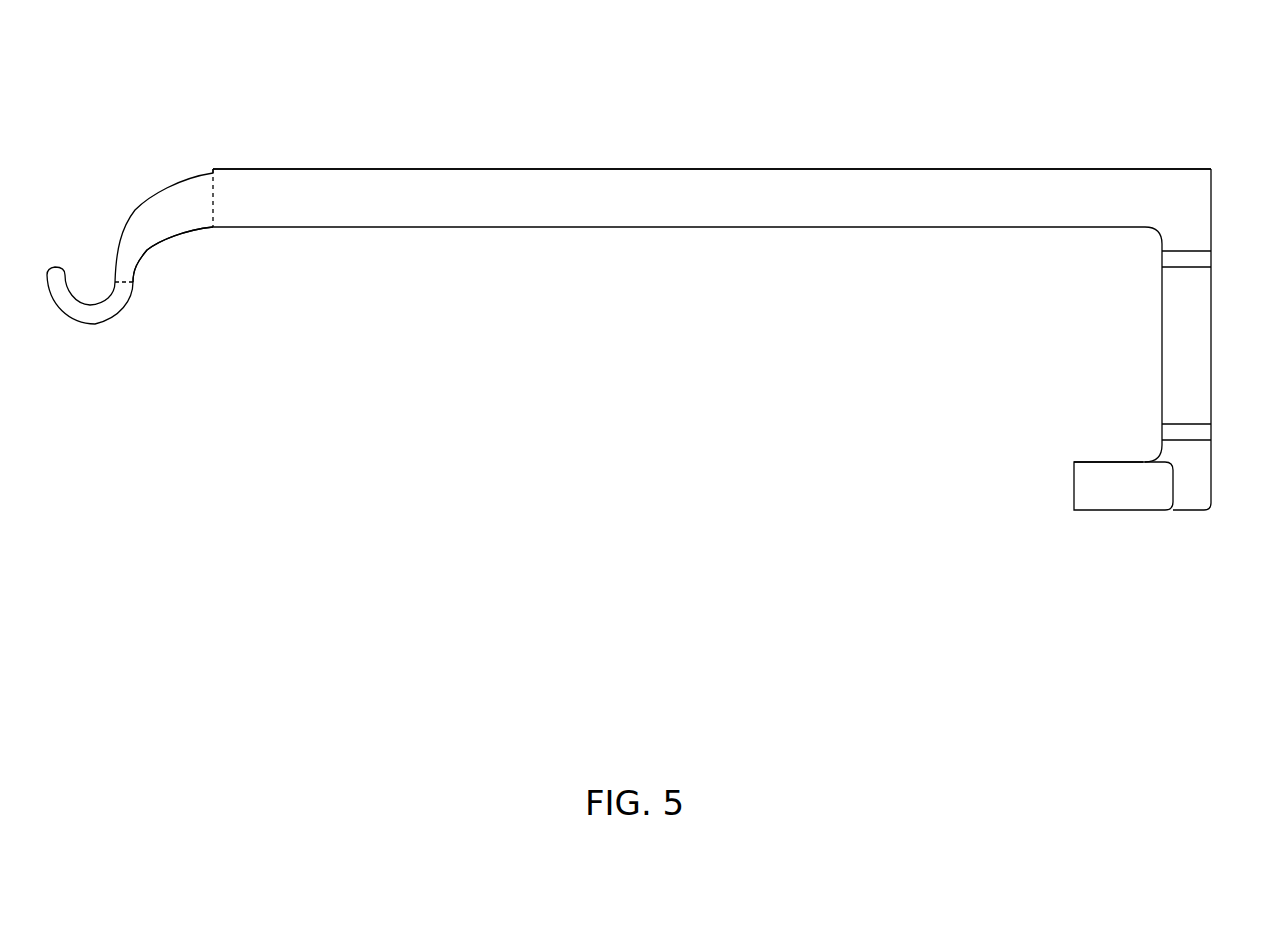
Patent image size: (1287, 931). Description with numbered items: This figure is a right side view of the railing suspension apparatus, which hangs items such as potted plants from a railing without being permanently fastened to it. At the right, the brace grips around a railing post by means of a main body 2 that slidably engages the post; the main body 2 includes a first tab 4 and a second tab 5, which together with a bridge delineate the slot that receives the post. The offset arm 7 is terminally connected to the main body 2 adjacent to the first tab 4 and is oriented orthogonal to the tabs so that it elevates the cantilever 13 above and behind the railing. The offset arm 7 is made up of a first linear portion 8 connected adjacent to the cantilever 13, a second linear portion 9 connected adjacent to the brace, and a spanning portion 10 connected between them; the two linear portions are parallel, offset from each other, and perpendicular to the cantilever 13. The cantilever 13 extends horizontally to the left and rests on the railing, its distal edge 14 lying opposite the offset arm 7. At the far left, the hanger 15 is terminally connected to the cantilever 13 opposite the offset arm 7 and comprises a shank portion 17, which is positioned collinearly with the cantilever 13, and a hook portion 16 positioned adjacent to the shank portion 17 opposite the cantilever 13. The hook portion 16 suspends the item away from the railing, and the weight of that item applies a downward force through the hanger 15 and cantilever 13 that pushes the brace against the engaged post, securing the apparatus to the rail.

The main body 2 is at (1050, 467).
The first tab 4 is at (1198, 487).
The second tab 5 is at (1097, 502).
The offset arm 7 is at (1140, 381).
The first linear portion 8 is at (1205, 258).
The second linear portion 9 is at (1205, 430).
The spanning portion 10 is at (1170, 319).
The cantilever 13 is at (650, 150).
The distal edge 14 is at (860, 168).
The hanger 15 is at (172, 152).
The hook portion 16 is at (75, 308).
The shank portion 17 is at (178, 218).